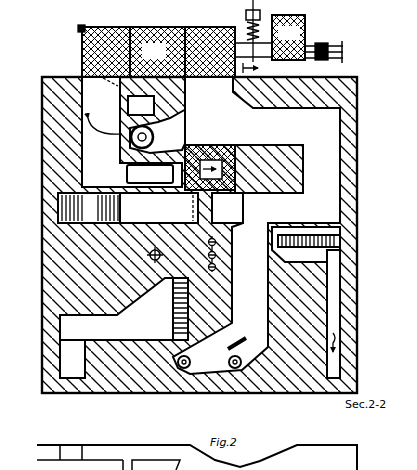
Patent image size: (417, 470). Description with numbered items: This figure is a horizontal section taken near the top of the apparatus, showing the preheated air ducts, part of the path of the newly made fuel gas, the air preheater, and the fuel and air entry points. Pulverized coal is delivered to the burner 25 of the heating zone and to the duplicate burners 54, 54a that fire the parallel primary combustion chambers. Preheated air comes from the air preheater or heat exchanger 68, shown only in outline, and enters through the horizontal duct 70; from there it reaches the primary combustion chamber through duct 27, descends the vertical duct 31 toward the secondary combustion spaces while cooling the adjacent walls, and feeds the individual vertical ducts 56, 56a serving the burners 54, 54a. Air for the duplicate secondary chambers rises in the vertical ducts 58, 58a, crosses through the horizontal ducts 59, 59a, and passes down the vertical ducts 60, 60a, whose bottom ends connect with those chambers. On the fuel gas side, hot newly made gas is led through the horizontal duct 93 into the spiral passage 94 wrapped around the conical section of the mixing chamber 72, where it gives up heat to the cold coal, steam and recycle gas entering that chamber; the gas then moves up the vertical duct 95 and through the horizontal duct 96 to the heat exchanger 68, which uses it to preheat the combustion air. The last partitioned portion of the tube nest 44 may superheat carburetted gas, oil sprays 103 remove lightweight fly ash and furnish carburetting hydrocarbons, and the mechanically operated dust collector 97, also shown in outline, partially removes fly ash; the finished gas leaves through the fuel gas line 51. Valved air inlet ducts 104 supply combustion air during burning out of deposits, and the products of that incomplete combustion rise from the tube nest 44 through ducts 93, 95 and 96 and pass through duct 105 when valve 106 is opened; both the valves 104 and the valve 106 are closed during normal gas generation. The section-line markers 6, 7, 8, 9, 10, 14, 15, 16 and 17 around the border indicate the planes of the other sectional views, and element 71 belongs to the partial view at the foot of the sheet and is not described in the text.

The burner 54 is at (220, 370).
The burner 25 is at (120, 149).
The vertical duct 95 is at (108, 167).
The duct 105 is at (141, 105).
The duct 27 is at (165, 130).
The horizontal duct 70 is at (226, 118).
The mixing chamber 72 is at (222, 158).
The spiral passage 94 is at (269, 169).
The vertical duct 31 is at (246, 212).
The horizontal duct 93 is at (184, 203).
The tube nest 44 is at (89, 208).
The oil spray 103 is at (207, 257).
The valved inlet duct for air 104 is at (164, 250).
The horizontal duct 59a is at (70, 333).
The vertical duct 60a is at (72, 359).
The vertical duct 58a is at (190, 301).
The burner 54a is at (178, 363).
The vertical duct 56 is at (245, 353).
The vertical duct 56a is at (212, 337).
The horizontal duct 59 is at (304, 256).
The vertical duct 58 is at (312, 250).
The vertical duct 60 is at (326, 363).
The air preheater 68 is at (156, 51).
The valve 106 is at (118, 86).
The horizontal duct 96 is at (105, 126).
The fuel gas line 51 is at (246, 16).
The dust collector 97 is at (288, 37).
The section line 15 is at (242, 408).
The section line 9 is at (85, 8).
The section line 17 is at (153, 8).
The section line 7 is at (302, 403).
The section line 6 is at (30, 118).
The section line 14 is at (30, 162).
The section line 16 is at (30, 254).
The section line 8 is at (30, 309).
The section line 10 is at (30, 364).
The member 71 is at (70, 444).